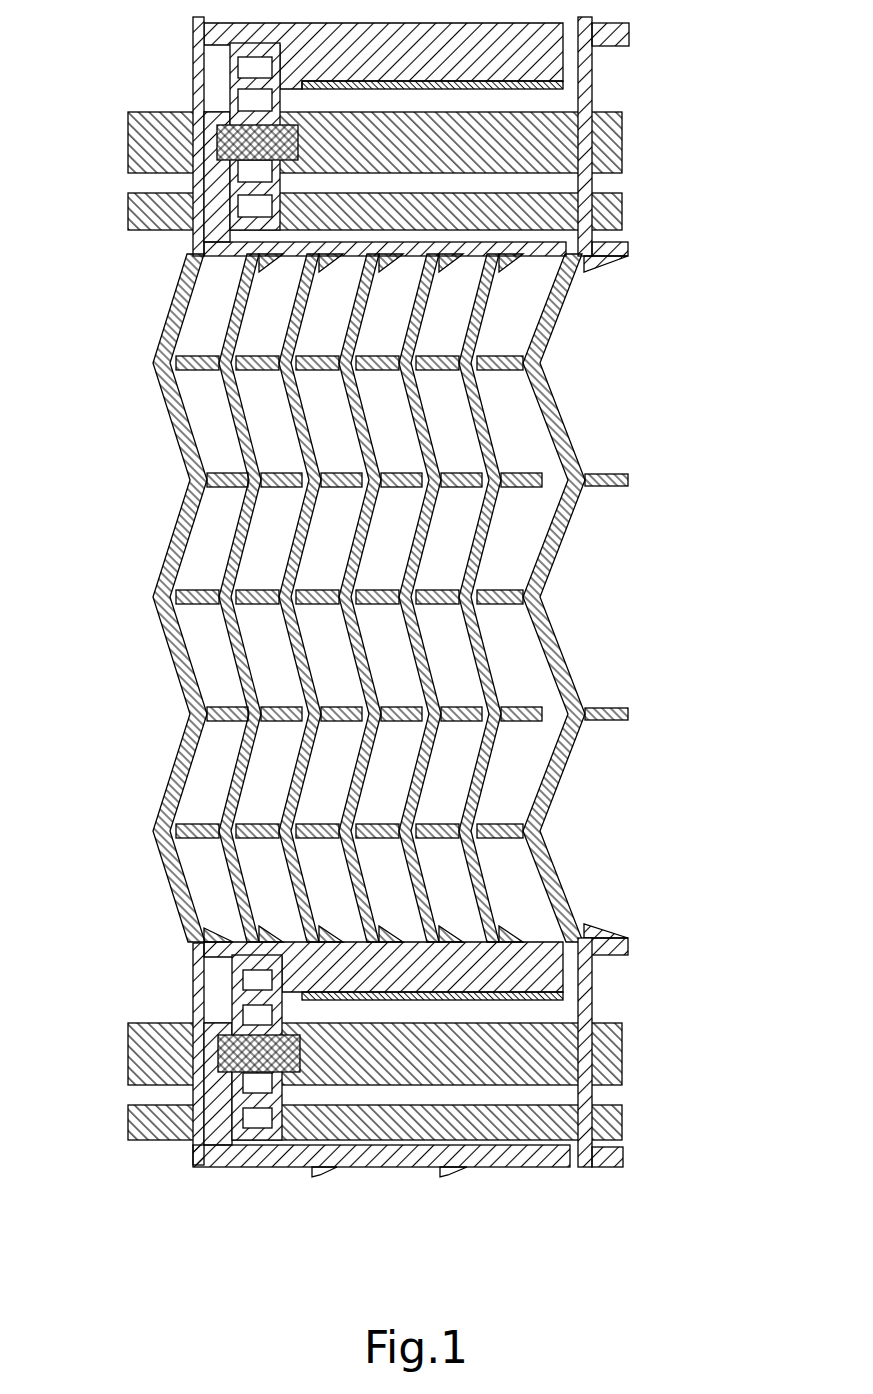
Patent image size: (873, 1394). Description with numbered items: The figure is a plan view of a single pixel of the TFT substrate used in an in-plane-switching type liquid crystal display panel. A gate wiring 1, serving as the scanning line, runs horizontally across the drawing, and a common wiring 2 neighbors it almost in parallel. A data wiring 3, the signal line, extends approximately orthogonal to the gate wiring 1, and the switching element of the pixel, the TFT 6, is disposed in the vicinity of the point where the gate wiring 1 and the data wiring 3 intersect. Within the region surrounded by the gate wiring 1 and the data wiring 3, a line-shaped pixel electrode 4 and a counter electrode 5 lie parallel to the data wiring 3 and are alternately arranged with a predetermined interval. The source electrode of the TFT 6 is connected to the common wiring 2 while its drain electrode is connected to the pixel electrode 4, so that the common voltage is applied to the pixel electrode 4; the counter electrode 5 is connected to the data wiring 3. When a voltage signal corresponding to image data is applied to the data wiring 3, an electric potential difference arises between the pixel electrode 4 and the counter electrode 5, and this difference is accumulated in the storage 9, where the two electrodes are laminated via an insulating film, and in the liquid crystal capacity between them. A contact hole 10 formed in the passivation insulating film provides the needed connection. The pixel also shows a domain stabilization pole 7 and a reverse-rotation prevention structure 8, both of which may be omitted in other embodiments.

The gate wiring 1 is at (622, 136).
The common wiring 2 is at (622, 206).
The data wiring 3 is at (193, 66).
The pixel electrode 4 is at (487, 428).
The counter electrode 5 is at (430, 527).
The TFT 6 is at (300, 1063).
The domain stabilization pole 7 is at (548, 724).
The reverse-rotation prevention structure 8 is at (520, 938).
The storage 9 is at (553, 972).
The contact hole 10 is at (248, 977).